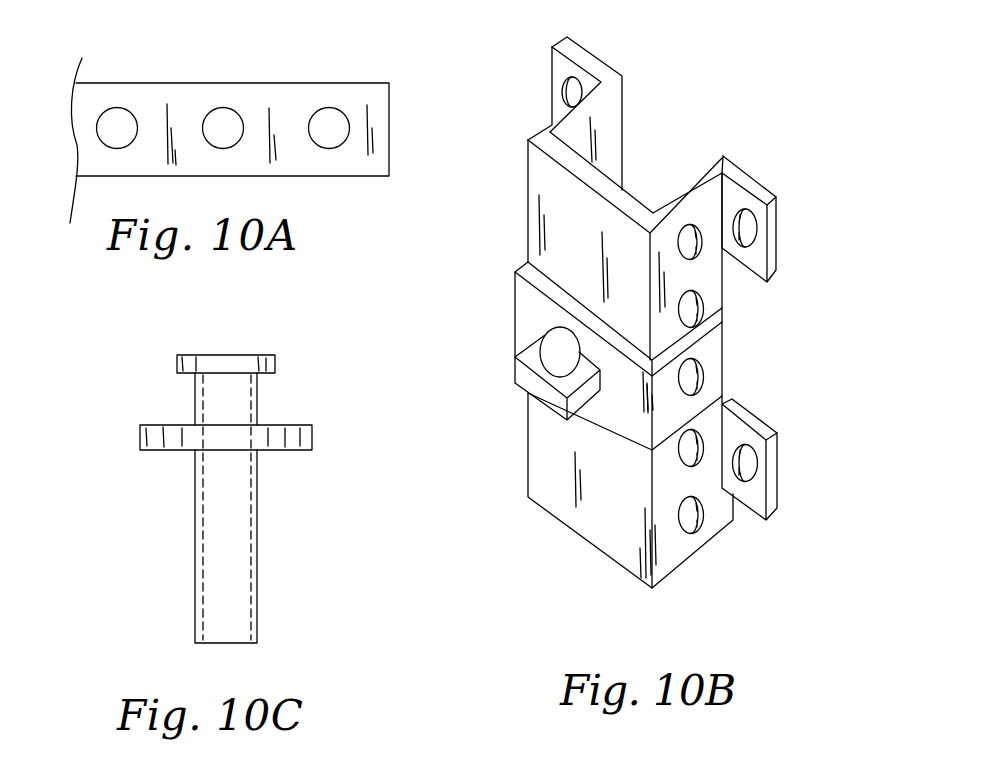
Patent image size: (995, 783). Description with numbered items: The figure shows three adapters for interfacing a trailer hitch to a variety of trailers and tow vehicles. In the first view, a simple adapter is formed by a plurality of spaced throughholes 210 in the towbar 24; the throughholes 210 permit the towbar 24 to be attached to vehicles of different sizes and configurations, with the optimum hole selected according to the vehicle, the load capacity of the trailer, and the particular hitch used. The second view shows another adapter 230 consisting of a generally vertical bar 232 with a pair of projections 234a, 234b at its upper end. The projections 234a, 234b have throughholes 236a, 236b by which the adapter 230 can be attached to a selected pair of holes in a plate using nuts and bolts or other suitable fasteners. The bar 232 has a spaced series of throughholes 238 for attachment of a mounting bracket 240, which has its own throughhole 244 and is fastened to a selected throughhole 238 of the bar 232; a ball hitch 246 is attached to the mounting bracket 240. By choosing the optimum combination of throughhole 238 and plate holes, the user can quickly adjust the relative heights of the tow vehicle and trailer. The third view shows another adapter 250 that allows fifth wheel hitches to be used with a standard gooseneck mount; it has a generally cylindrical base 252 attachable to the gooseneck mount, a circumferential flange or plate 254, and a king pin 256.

In FIG. 10A, the towbar 24 is at (277, 67).
In FIG. 10A, the throughholes 210 is at (313, 118).
In FIG. 10B, the adapter 230 is at (646, 325).
In FIG. 10B, the bar 232 is at (597, 499).
In FIG. 10B, the projection 234a is at (584, 112).
In FIG. 10B, the projection 234b is at (792, 340).
In FIG. 10B, the throughhole 236a is at (562, 98).
In FIG. 10B, the throughhole 236b is at (757, 236).
In FIG. 10B, the throughholes 238 is at (699, 526).
In FIG. 10B, the mounting bracket 240 is at (513, 368).
In FIG. 10B, the throughhole 244 is at (704, 373).
In FIG. 10B, the ball hitch 246 is at (550, 333).
In FIG. 10C, the adapter 250 is at (203, 492).
In FIG. 10C, the cylindrical base 252 is at (195, 531).
In FIG. 10C, the circumferential flange or plate 254 is at (300, 450).
In FIG. 10C, the king pin 256 is at (277, 362).